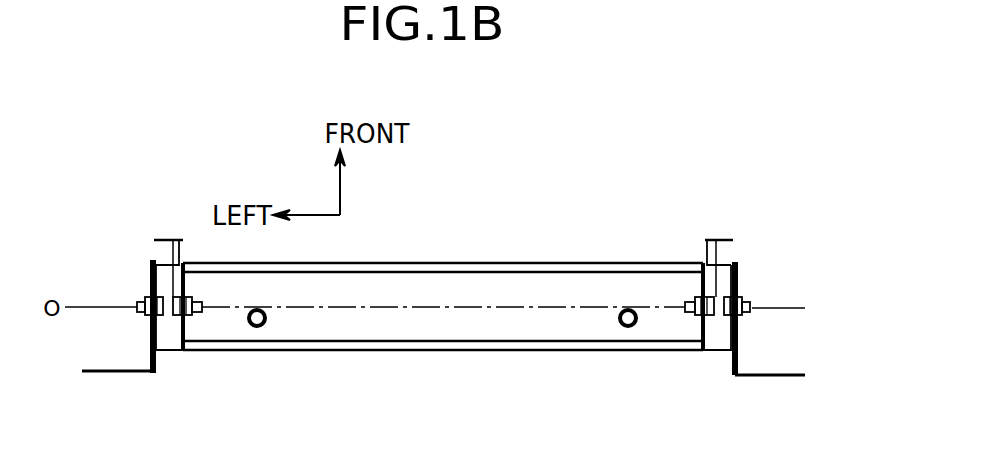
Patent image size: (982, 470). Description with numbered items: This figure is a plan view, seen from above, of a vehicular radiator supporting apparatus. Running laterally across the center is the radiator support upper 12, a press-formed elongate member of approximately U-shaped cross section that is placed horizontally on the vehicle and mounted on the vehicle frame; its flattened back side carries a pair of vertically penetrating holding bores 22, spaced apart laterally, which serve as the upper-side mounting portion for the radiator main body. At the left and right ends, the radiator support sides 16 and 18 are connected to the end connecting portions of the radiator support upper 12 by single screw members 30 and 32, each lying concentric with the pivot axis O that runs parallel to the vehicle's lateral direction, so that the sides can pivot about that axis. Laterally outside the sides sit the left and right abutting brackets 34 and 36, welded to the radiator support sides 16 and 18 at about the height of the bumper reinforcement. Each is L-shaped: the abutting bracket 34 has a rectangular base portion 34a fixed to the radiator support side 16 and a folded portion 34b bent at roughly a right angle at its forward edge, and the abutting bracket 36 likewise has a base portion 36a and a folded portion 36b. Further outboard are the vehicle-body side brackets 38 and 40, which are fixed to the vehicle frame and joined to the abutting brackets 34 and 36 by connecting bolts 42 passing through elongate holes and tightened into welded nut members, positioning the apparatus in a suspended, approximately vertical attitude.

The radiator support upper 12 is at (418, 285).
The radiator support side 16 is at (165, 352).
The radiator support side 18 is at (717, 352).
The holding bores 22 is at (257, 328).
The screw member 30 is at (173, 240).
The screw member 32 is at (717, 240).
The abutting bracket 34 is at (134, 222).
The base portion 34a is at (150, 250).
The folded portion 34b is at (158, 240).
The abutting bracket 36 is at (750, 246).
The base portion 36a is at (738, 249).
The folded portion 36b is at (737, 247).
The vehicle-body side bracket 38 is at (118, 375).
The vehicle-body side bracket 40 is at (778, 377).
The connecting bolts 42 is at (150, 296).